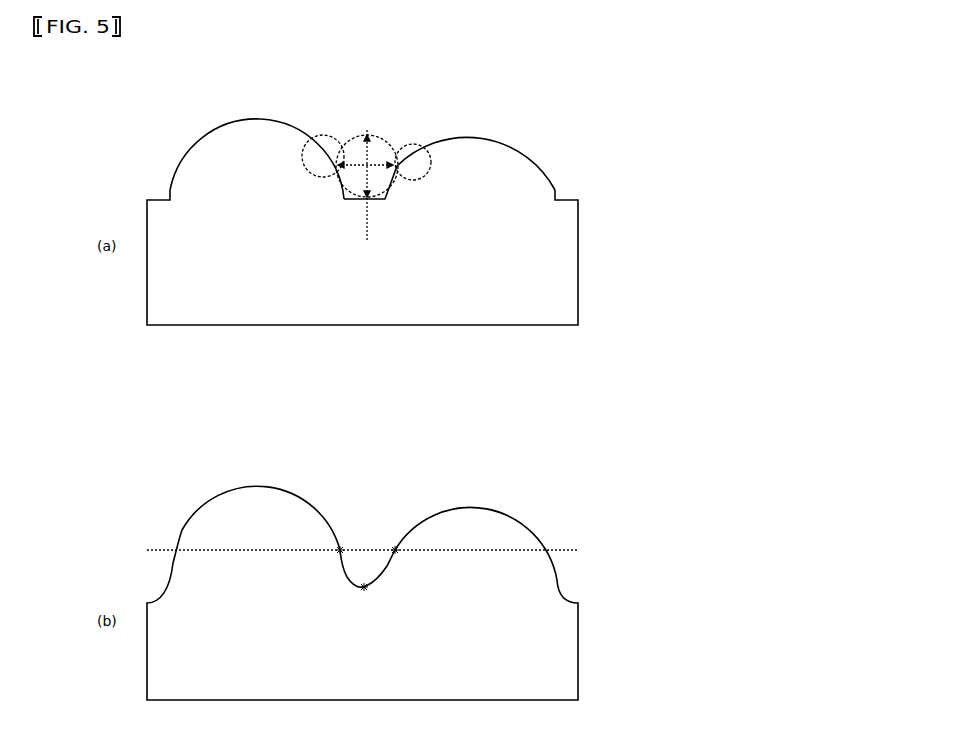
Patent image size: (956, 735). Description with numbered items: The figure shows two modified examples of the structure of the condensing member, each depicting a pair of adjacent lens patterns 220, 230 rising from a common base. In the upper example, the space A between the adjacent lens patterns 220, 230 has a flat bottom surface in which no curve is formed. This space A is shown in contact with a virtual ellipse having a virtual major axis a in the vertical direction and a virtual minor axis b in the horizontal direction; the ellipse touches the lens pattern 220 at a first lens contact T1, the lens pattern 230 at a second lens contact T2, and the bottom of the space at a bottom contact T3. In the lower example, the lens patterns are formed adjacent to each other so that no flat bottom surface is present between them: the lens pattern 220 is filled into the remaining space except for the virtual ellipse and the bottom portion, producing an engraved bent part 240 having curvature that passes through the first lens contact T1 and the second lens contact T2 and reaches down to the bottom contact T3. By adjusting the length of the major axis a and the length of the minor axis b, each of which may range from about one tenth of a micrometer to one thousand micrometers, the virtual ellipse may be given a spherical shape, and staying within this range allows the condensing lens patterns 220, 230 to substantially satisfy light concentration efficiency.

The lens pattern 220 is at (258, 112).
The lens pattern 230 is at (470, 136).
The engraved bent part 240 is at (356, 566).
The space between lens patterns A is at (340, 197).
The first lens contact T1 is at (302, 148).
The second lens contact T2 is at (430, 147).
The bottom contact T3 is at (367, 240).
The virtual major axis a is at (366, 177).
The virtual minor axis b is at (357, 164).